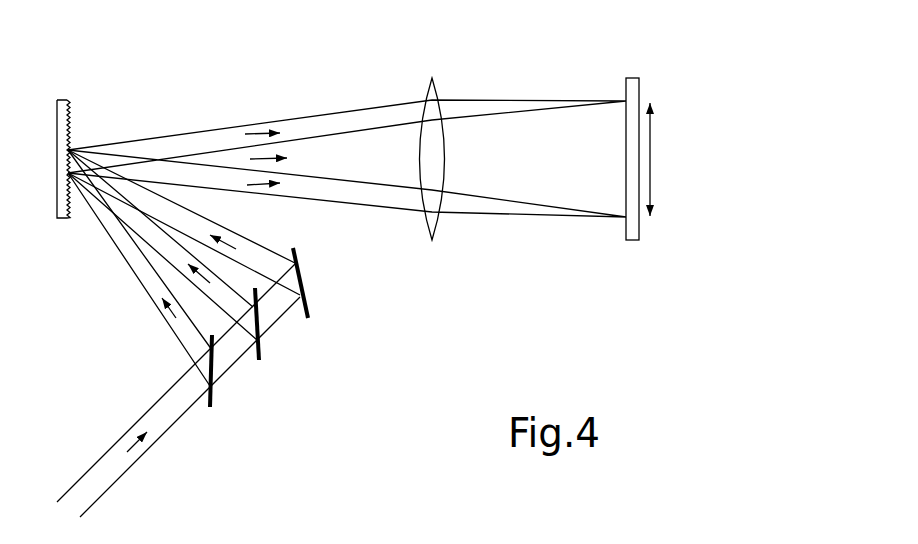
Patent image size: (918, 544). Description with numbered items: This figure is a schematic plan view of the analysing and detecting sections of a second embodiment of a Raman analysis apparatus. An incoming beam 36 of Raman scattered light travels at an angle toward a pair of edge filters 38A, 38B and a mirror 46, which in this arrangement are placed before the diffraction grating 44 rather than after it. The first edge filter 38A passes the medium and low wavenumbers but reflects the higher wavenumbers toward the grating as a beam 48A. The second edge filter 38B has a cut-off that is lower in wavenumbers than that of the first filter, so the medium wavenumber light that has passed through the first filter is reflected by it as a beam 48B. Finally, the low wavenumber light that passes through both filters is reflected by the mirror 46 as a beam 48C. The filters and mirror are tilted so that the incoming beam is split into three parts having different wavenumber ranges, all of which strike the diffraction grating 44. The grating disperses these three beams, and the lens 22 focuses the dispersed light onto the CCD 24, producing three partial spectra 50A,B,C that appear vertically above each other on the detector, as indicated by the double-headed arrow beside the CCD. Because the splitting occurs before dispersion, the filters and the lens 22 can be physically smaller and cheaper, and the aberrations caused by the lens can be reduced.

The lens 22 is at (428, 88).
The CCD 24 is at (630, 77).
The incoming beam 36 is at (155, 417).
The edge filter 38A is at (212, 379).
The edge filter 38B is at (258, 332).
The diffraction grating 44 is at (68, 100).
The mirror 46 is at (302, 278).
The beam 48A is at (150, 292).
The beam 48B is at (149, 232).
The beam 48C is at (192, 220).
The partial spectra 50A,B,C is at (650, 147).